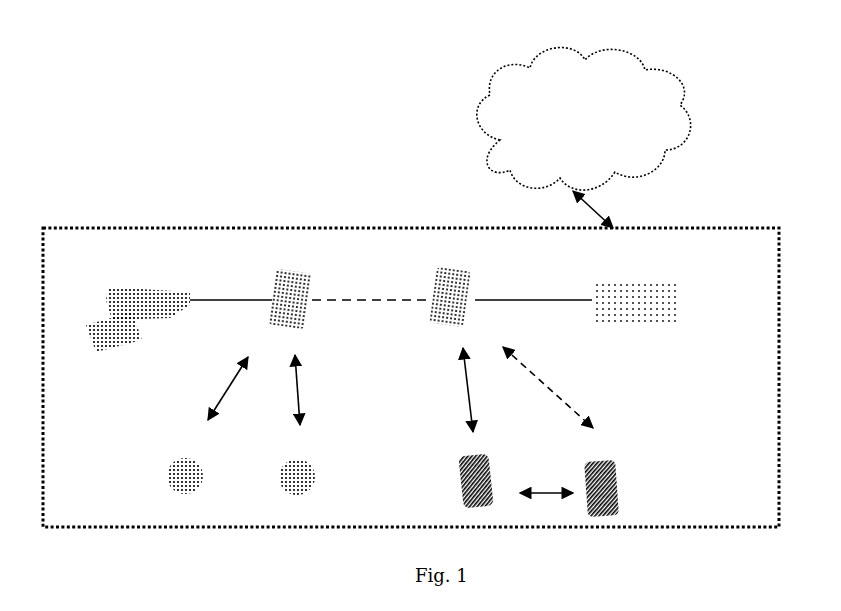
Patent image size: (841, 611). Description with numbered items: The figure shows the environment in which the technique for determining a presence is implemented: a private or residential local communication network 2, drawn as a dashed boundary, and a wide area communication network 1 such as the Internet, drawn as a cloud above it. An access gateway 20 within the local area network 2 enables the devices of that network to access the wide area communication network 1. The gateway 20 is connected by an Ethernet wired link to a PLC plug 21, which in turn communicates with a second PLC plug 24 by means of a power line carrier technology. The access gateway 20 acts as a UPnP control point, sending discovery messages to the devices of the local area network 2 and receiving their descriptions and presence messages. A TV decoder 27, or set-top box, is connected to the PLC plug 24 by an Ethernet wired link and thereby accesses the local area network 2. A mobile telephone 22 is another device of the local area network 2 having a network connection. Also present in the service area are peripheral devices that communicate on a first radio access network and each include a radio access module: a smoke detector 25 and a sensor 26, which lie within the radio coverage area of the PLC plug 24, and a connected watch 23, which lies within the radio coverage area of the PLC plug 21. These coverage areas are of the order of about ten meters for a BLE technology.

The wide area communication network 1 is at (478, 152).
The local communication network 2 is at (128, 228).
The access gateway 20 is at (612, 276).
The PLC plug 21 is at (472, 290).
The mobile telephone 22 is at (615, 480).
The connected watch 23 is at (490, 475).
The PLC plug 24 is at (315, 285).
The smoke detector 25 is at (200, 460).
The sensor 26 is at (307, 465).
The TV decoder 27 is at (120, 290).